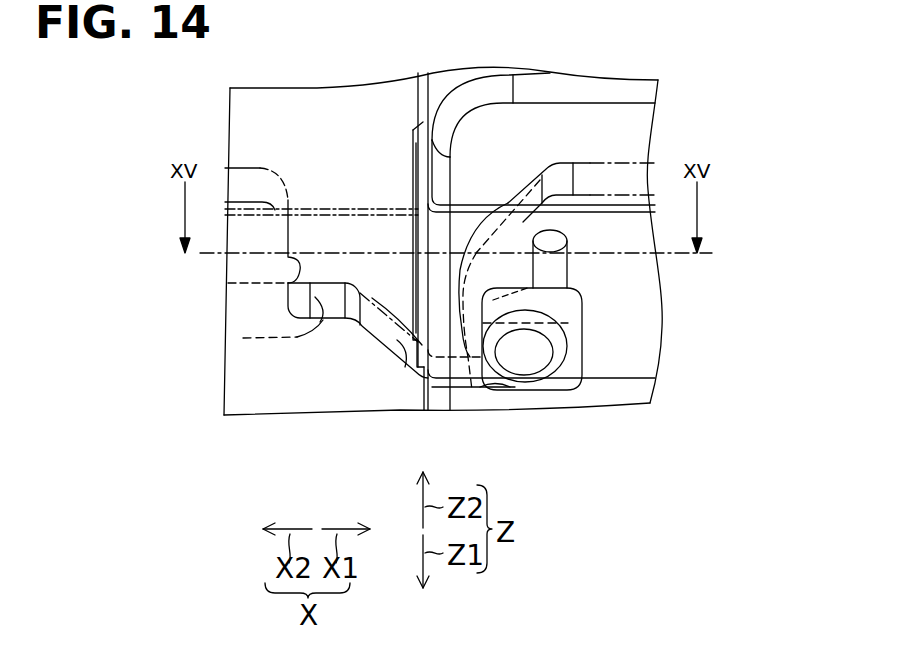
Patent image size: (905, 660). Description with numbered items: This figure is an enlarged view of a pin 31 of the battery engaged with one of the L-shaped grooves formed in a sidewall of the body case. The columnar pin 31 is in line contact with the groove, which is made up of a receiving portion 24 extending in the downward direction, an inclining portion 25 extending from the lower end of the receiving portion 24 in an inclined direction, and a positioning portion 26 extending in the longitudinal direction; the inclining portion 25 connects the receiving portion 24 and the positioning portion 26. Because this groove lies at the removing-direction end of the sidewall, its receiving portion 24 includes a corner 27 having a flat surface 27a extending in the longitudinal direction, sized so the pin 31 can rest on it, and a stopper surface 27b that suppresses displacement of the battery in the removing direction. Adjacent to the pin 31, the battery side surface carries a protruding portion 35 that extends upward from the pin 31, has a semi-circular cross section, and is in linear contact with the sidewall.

The corner 27 is at (140, 273).
The flat surface 27a is at (243, 338).
The stopper surface 27b is at (227, 283).
The inclining portion 25 is at (405, 367).
The receiving portion 24 is at (470, 363).
The positioning portion 26 is at (505, 392).
The pin 31 is at (538, 360).
The protruding portion 35 is at (552, 273).